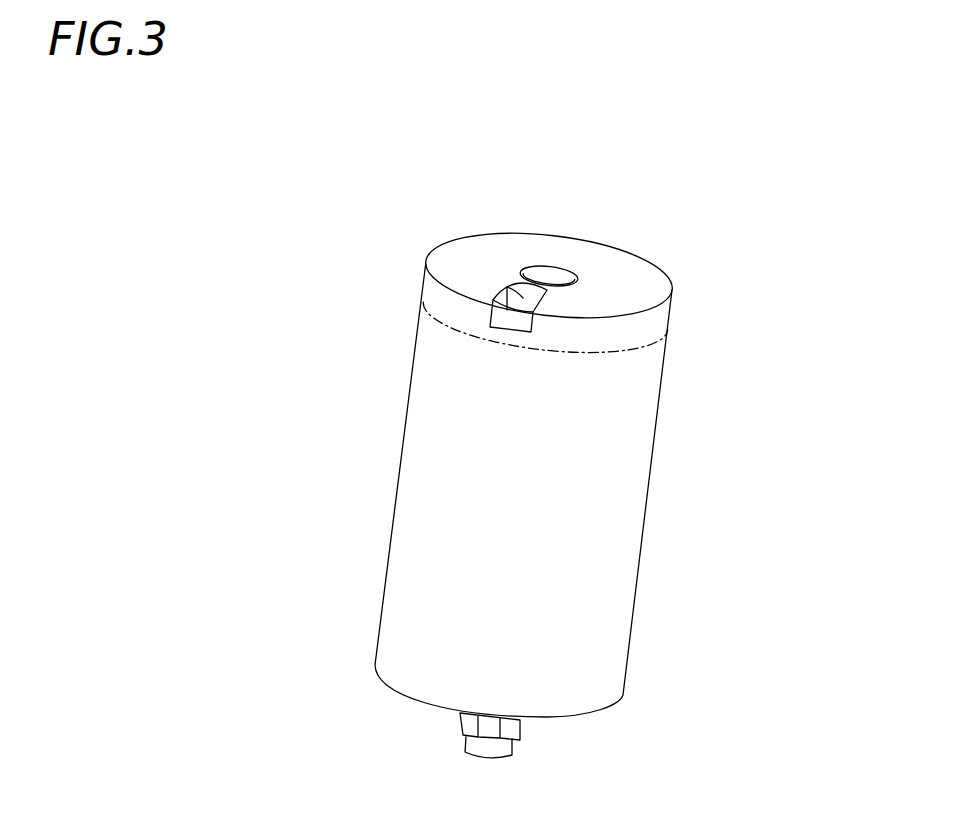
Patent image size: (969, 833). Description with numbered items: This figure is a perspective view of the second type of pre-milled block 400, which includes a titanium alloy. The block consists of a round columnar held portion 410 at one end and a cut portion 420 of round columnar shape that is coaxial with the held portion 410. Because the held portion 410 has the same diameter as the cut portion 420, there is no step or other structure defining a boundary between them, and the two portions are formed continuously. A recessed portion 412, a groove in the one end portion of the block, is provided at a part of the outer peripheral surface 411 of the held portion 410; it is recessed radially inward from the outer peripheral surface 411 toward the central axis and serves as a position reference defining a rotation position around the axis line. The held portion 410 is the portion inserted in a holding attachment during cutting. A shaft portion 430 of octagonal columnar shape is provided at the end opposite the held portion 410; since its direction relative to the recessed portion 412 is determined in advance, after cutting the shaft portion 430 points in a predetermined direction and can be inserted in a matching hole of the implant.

The pre-milled block 400 is at (688, 213).
The held portion 410 is at (420, 287).
The outer peripheral surface 411 is at (658, 320).
The recessed portion 412 is at (522, 290).
The cut portion 420 is at (402, 458).
The shaft portion 430 is at (522, 728).